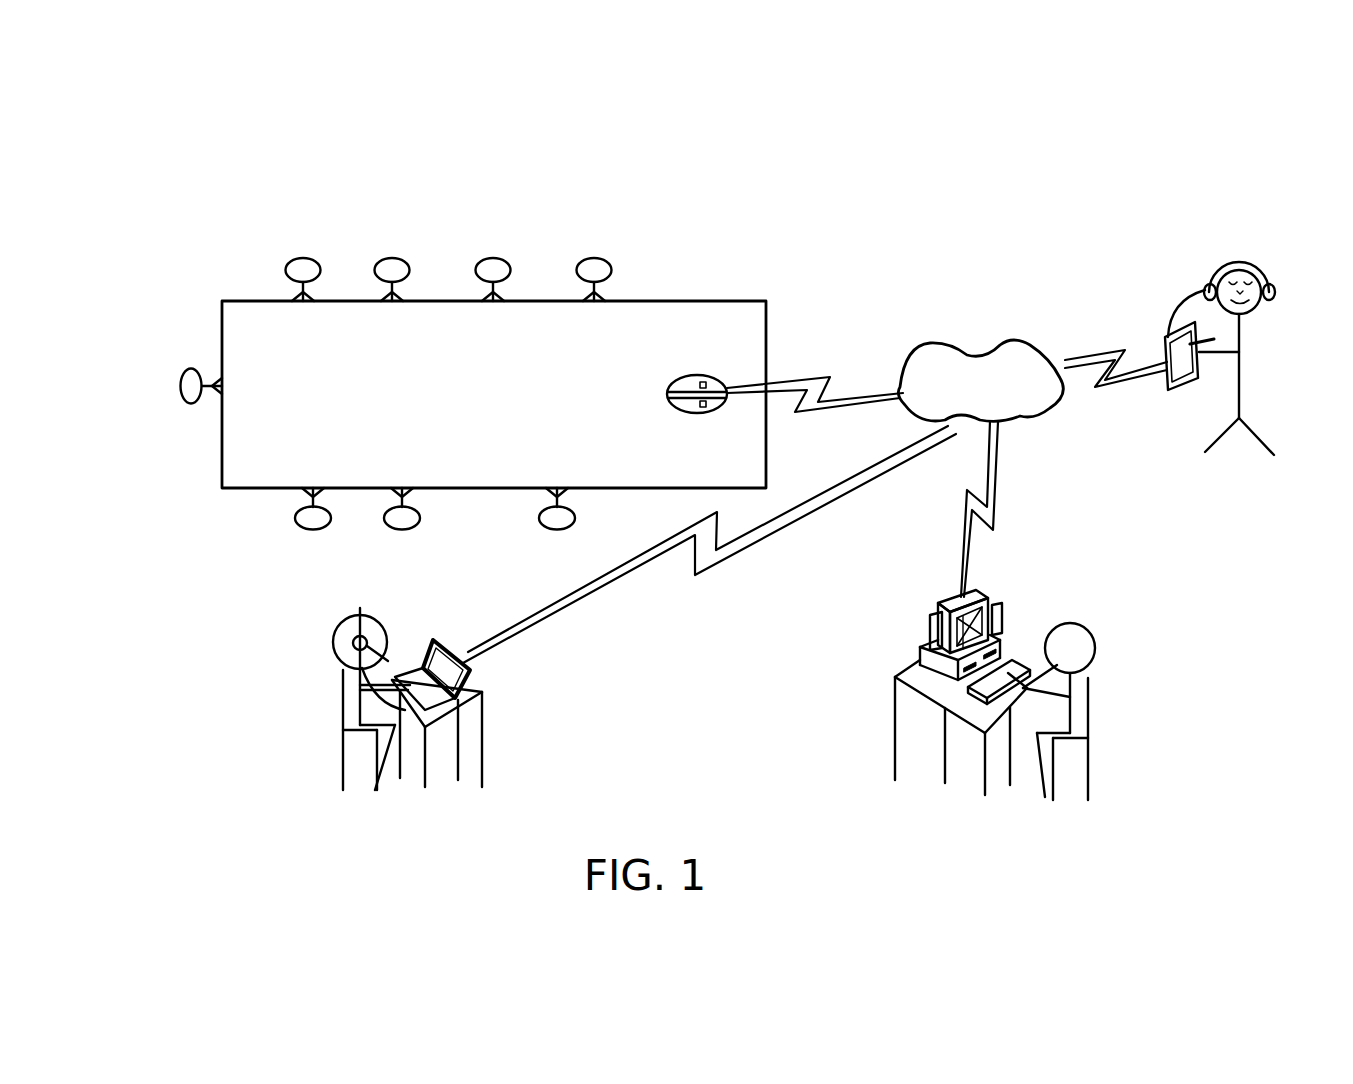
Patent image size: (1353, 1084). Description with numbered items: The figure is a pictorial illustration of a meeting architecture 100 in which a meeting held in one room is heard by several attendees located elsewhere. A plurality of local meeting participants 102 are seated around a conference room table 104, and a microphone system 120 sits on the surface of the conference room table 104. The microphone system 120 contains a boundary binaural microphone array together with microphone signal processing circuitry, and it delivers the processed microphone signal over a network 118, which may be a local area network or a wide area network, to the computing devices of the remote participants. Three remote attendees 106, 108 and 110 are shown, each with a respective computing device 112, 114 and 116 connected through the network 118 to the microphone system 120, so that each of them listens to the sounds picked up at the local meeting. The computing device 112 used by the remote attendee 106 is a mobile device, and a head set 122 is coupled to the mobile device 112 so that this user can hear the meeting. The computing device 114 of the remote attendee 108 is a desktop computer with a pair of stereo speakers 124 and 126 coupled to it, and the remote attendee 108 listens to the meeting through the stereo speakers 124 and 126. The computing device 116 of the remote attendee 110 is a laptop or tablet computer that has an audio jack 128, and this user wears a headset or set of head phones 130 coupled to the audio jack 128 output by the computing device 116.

The meeting architecture 100 is at (976, 176).
The local meeting participants 102 is at (305, 258).
The conference room table 104 is at (250, 312).
The remote attendee 106 is at (1240, 386).
The remote attendee 108 is at (1095, 650).
The remote attendee 110 is at (357, 698).
The computing device 112 is at (1167, 338).
The computing device 114 is at (945, 615).
The computing device 116 is at (443, 647).
The network 118 is at (963, 350).
The microphone system 120 is at (697, 377).
The head set 122 is at (1235, 250).
The stereo speaker 124 is at (930, 650).
The stereo speaker 126 is at (1002, 612).
The audio jack 128 is at (470, 691).
The head phones 130 is at (372, 650).